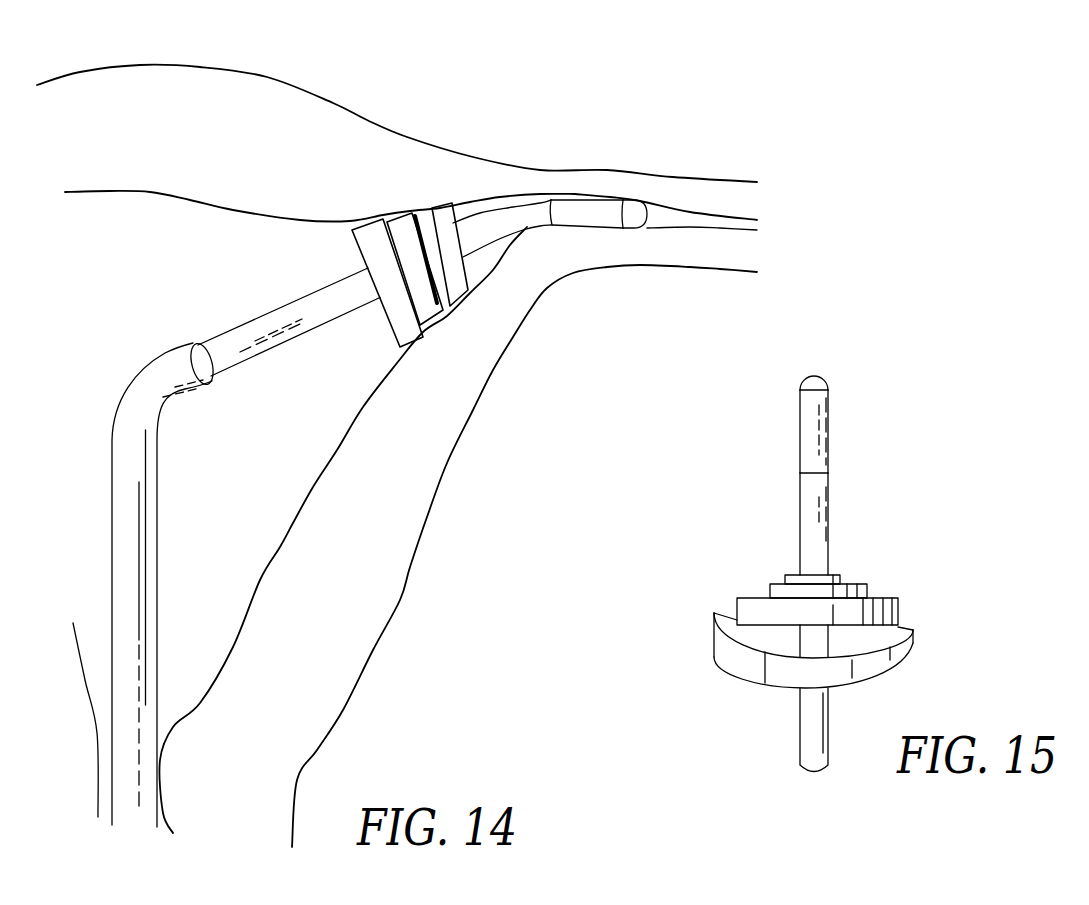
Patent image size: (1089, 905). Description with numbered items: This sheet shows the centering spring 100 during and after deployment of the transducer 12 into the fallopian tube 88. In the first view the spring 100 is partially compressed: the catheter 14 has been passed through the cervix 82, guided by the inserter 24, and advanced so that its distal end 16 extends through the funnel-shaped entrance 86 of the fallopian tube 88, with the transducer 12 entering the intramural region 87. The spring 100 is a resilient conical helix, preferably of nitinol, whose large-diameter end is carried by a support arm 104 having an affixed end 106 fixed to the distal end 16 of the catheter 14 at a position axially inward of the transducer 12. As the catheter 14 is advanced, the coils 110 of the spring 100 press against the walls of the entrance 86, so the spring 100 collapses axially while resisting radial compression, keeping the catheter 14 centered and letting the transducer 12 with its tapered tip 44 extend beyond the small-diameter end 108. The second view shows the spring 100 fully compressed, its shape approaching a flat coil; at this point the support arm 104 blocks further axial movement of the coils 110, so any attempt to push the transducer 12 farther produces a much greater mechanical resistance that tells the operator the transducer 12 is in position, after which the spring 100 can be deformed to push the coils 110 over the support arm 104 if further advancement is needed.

In FIG. 14, the transducer 12 is at (593, 213).
In FIG. 15, the transducer 12 is at (827, 430).
In FIG. 14, the catheter 14 is at (263, 313).
In FIG. 15, the catheter 14 is at (828, 503).
In FIG. 14, the distal end 16 is at (523, 230).
In FIG. 15, the distal end 16 is at (805, 507).
In FIG. 14, the inserter 24 is at (112, 497).
In FIG. 14, the tapered tip 44 is at (633, 218).
In FIG. 15, the tapered tip 44 is at (820, 382).
In FIG. 14, the cervix 82 is at (153, 737).
In FIG. 14, the entrance 86 is at (513, 190).
In FIG. 14, the intramural region 87 is at (577, 205).
In FIG. 14, the fallopian tube 88 is at (640, 164).
In FIG. 14, the centering spring 100 is at (456, 213).
In FIG. 15, the centering spring 100 is at (820, 569).
In FIG. 15, the support arm 104 is at (870, 578).
In FIG. 15, the affixed end 106 is at (808, 635).
In FIG. 14, the small-diameter end 108 is at (473, 197).
In FIG. 15, the coils 110 is at (775, 575).